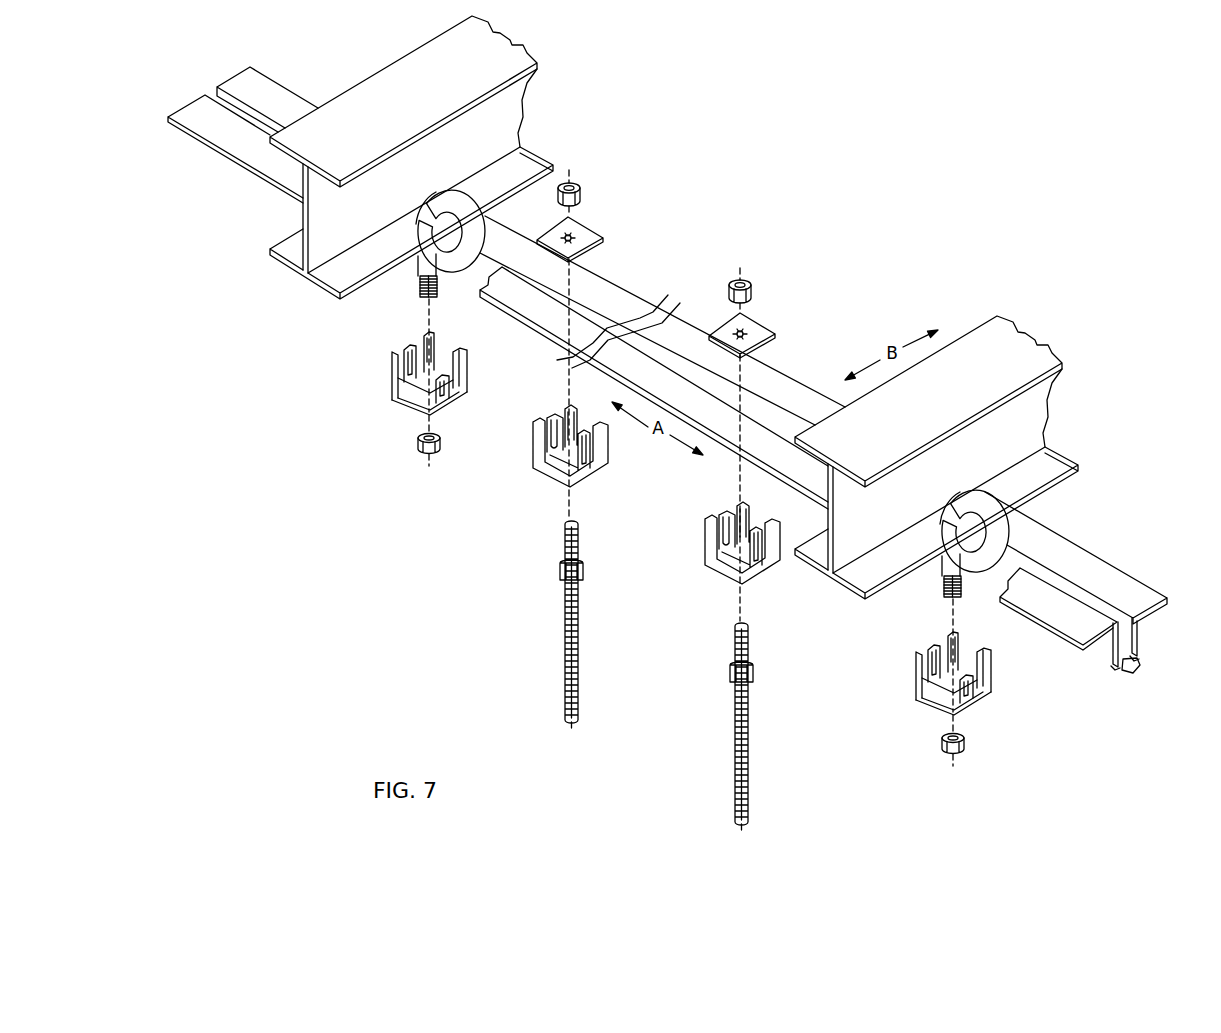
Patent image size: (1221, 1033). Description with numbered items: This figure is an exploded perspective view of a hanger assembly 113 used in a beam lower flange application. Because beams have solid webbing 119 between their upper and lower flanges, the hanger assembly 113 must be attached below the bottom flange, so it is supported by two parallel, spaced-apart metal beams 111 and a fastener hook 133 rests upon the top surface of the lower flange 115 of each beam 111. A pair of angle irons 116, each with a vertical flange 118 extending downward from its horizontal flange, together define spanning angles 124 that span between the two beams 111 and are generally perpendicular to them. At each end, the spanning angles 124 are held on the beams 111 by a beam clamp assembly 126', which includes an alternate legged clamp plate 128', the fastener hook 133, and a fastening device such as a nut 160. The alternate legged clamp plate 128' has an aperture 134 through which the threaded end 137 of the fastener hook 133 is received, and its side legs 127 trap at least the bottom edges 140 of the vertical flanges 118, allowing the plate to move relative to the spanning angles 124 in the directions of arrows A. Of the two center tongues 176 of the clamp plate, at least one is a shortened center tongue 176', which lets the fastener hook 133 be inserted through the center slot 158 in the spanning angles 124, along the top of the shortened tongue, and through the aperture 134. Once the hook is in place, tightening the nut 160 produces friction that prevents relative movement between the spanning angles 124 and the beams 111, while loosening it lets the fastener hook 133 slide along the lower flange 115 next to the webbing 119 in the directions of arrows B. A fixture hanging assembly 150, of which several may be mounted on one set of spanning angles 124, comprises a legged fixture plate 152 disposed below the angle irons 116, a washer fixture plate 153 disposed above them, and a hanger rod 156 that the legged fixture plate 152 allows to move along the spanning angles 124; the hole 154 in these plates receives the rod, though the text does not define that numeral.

The beam 111 is at (513, 46).
The webbing 119 is at (507, 115).
The lower flange 115 is at (327, 275).
The hanger assembly 113 is at (695, 183).
The center slot 158 is at (590, 308).
The angle iron 116 is at (1080, 555).
The vertical flange 118 is at (1137, 633).
The bottom edge 140 is at (1139, 654).
The spanning angles 124 is at (1133, 672).
The fastener hook 133 is at (421, 266).
The threaded end 137 is at (421, 290).
The center tongue 176 is at (676, 475).
The shortened center tongue 176' is at (737, 554).
The aperture 134 is at (397, 397).
The alternate legged clamp plate 128' is at (622, 526).
The side legs 127 is at (435, 345).
The nut 160 is at (422, 450).
The beam clamp assembly 126' is at (641, 577).
The washer fixture plate 153 is at (588, 225).
The hole 154 is at (577, 235).
The legged fixture plate 152 is at (532, 447).
The hanger rod 156 is at (565, 608).
The fixture hanging assembly 150 is at (550, 700).